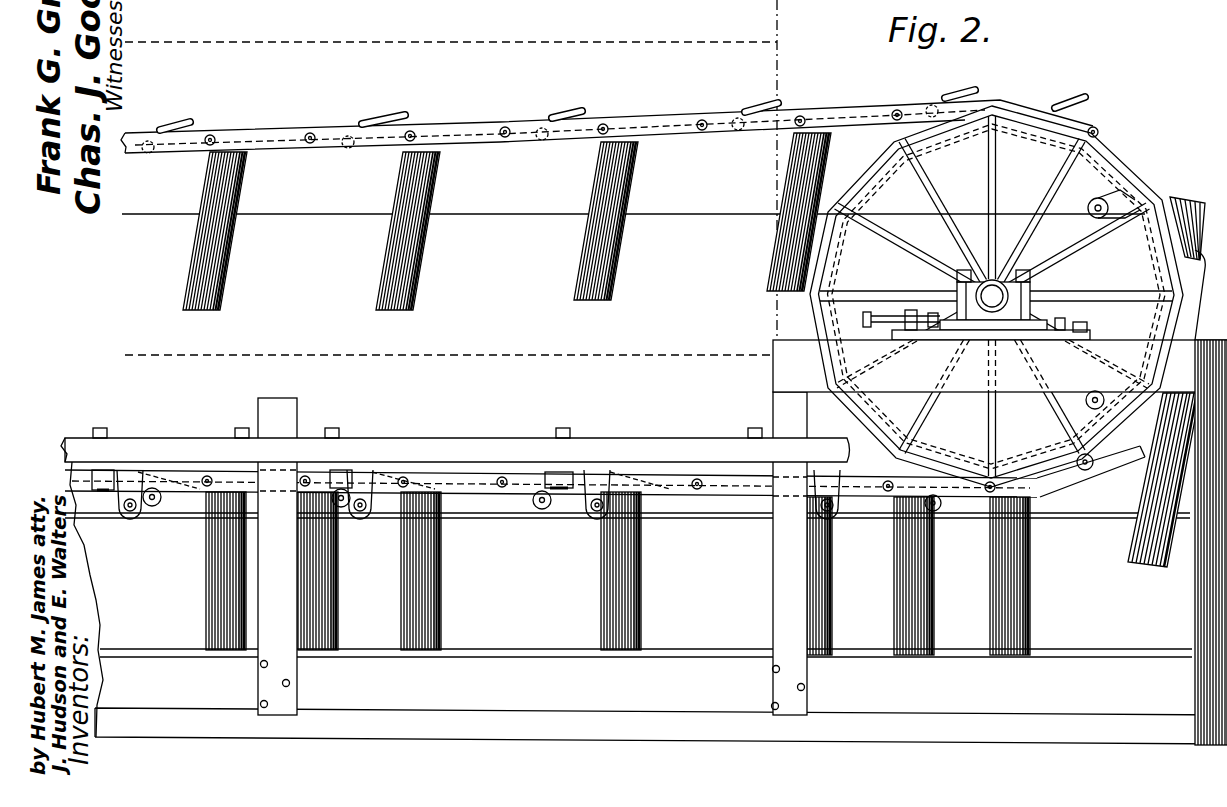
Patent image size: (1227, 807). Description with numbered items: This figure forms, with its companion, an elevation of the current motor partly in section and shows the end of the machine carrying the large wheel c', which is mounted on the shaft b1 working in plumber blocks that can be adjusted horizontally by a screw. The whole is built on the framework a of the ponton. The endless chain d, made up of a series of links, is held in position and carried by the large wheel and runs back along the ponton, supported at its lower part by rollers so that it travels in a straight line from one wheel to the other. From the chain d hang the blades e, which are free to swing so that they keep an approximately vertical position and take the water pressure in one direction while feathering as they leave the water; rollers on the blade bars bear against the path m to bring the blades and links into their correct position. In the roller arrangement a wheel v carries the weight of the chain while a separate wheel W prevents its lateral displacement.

The framework of the ponton a is at (168, 727).
The endless chain d is at (520, 130).
The blades e is at (222, 281).
The lateral-guide wheel W is at (85, 472).
The weight-carrying wheel v is at (366, 514).
The path m is at (1070, 515).
The large wheel c' is at (1131, 184).
The shaft b1 is at (975, 294).